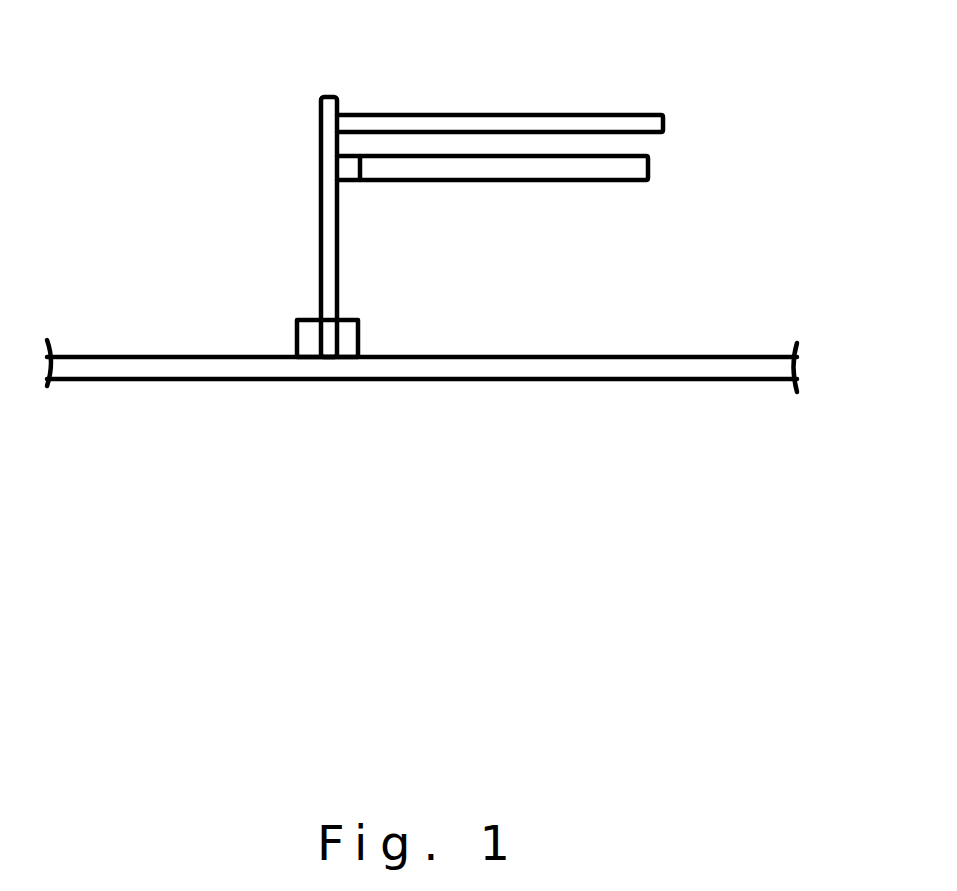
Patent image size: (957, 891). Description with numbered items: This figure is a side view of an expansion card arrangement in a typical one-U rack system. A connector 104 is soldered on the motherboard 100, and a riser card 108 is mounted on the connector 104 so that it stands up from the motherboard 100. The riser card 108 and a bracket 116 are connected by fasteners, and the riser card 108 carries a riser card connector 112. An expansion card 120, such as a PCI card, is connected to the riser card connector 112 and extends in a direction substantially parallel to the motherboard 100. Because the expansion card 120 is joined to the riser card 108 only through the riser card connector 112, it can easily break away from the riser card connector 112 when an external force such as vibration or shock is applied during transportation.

The motherboard 100 is at (652, 360).
The connector 104 is at (312, 343).
The riser card 108 is at (321, 207).
The riser card connector 112 is at (347, 168).
The bracket 116 is at (445, 128).
The expansion card 120 is at (628, 170).